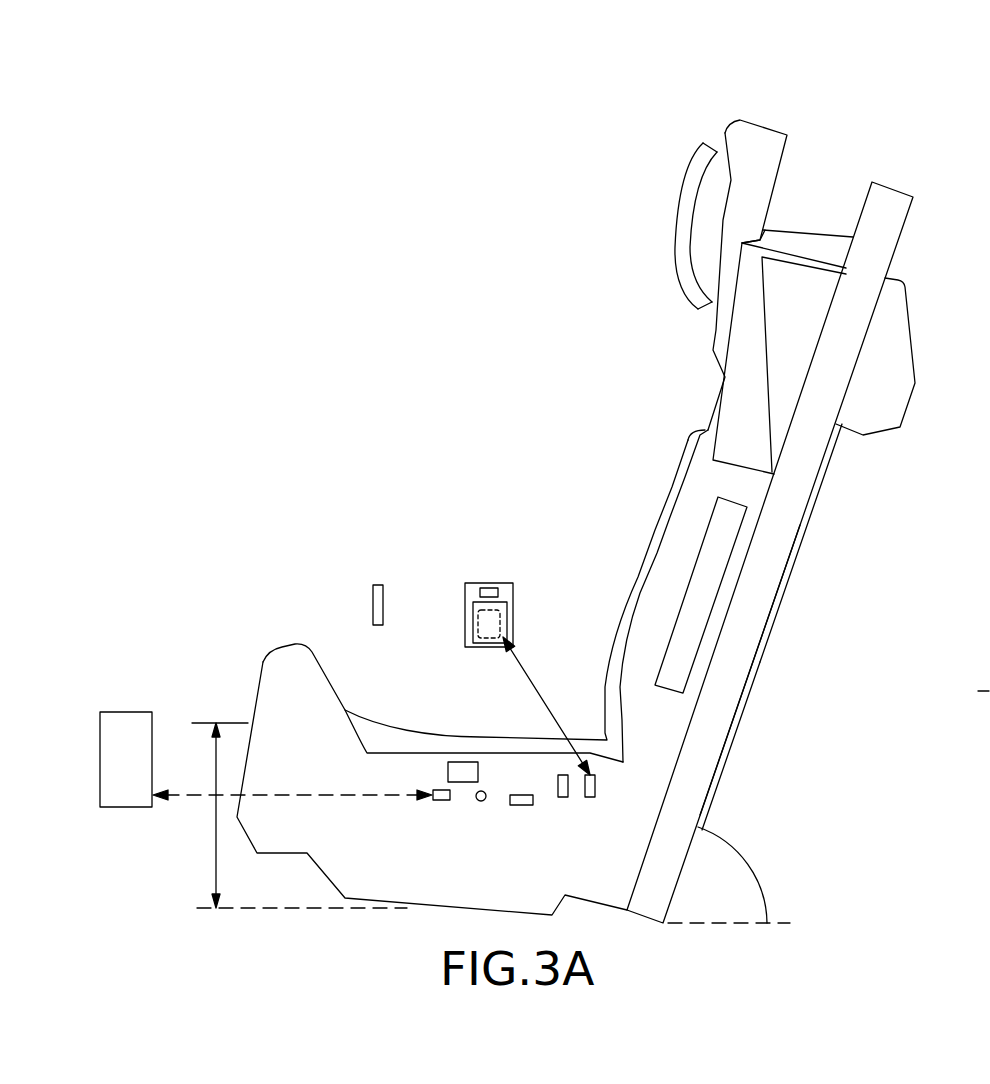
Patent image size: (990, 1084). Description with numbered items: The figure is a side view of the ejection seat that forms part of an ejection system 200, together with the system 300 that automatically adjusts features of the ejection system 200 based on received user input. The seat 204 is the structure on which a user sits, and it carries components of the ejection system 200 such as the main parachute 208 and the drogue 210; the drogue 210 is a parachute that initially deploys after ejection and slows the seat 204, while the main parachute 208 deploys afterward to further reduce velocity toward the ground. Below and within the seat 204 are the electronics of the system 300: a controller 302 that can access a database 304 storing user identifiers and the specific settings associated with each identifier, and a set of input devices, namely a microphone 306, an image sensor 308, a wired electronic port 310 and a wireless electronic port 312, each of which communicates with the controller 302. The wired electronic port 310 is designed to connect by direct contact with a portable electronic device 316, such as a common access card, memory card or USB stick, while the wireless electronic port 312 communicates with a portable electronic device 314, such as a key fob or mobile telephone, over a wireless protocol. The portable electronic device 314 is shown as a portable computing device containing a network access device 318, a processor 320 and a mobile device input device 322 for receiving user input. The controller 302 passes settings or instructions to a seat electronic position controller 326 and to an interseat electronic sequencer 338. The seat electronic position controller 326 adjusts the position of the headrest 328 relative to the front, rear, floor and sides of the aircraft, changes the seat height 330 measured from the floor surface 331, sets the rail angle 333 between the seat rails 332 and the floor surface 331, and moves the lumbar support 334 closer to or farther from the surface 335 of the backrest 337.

The ejection system 200 is at (327, 628).
The seat 204 is at (652, 542).
The main parachute 208 is at (777, 463).
The drogue 210 is at (900, 405).
The system 300 is at (317, 525).
The controller 302 is at (440, 802).
The database 304 is at (125, 808).
The microphone 306 is at (481, 802).
The image sensor 308 is at (521, 806).
The wired electronic port 310 is at (562, 798).
The wireless electronic port 312 is at (592, 798).
The portable electronic device 314 is at (466, 588).
The portable electronic device 316 is at (372, 604).
The network access device 318 is at (487, 652).
The processor 320 is at (500, 615).
The mobile device input device 322 is at (513, 595).
The seat electronic position controller 326 is at (450, 768).
The headrest 328 is at (727, 212).
The seat height 330 is at (218, 878).
The floor surface 331 is at (337, 913).
The seat rails 332 is at (743, 693).
The rail angle 333 is at (757, 880).
The lumbar support 334 is at (632, 597).
The surface 335 is at (773, 623).
The backrest 337 is at (823, 490).
The interseat electronic sequencer 338 is at (965, 692).